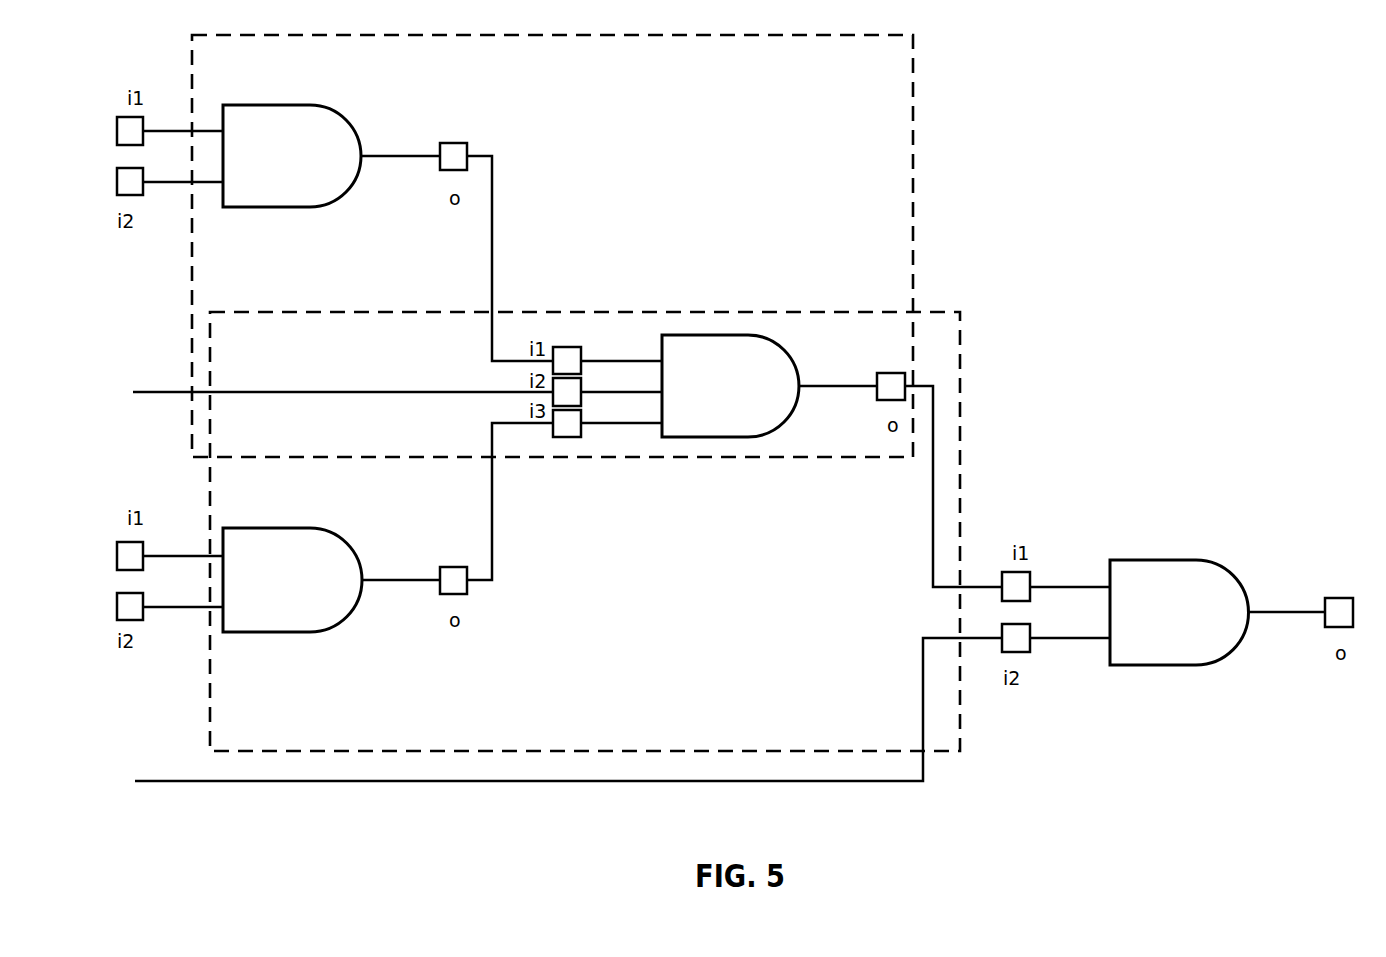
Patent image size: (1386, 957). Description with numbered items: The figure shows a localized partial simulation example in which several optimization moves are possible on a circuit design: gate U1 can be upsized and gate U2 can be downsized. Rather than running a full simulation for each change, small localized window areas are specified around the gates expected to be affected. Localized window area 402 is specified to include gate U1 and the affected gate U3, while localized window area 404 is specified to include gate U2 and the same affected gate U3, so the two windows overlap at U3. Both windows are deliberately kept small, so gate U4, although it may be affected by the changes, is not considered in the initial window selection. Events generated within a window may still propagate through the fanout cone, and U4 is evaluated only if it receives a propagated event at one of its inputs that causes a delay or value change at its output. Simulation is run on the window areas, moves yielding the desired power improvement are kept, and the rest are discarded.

The localized window area 402 is at (913, 142).
The localized window area 404 is at (960, 500).
The gate U1 is at (292, 156).
The gate U2 is at (292, 580).
The affected gate U3 is at (730, 386).
The gate U4 is at (1179, 612).